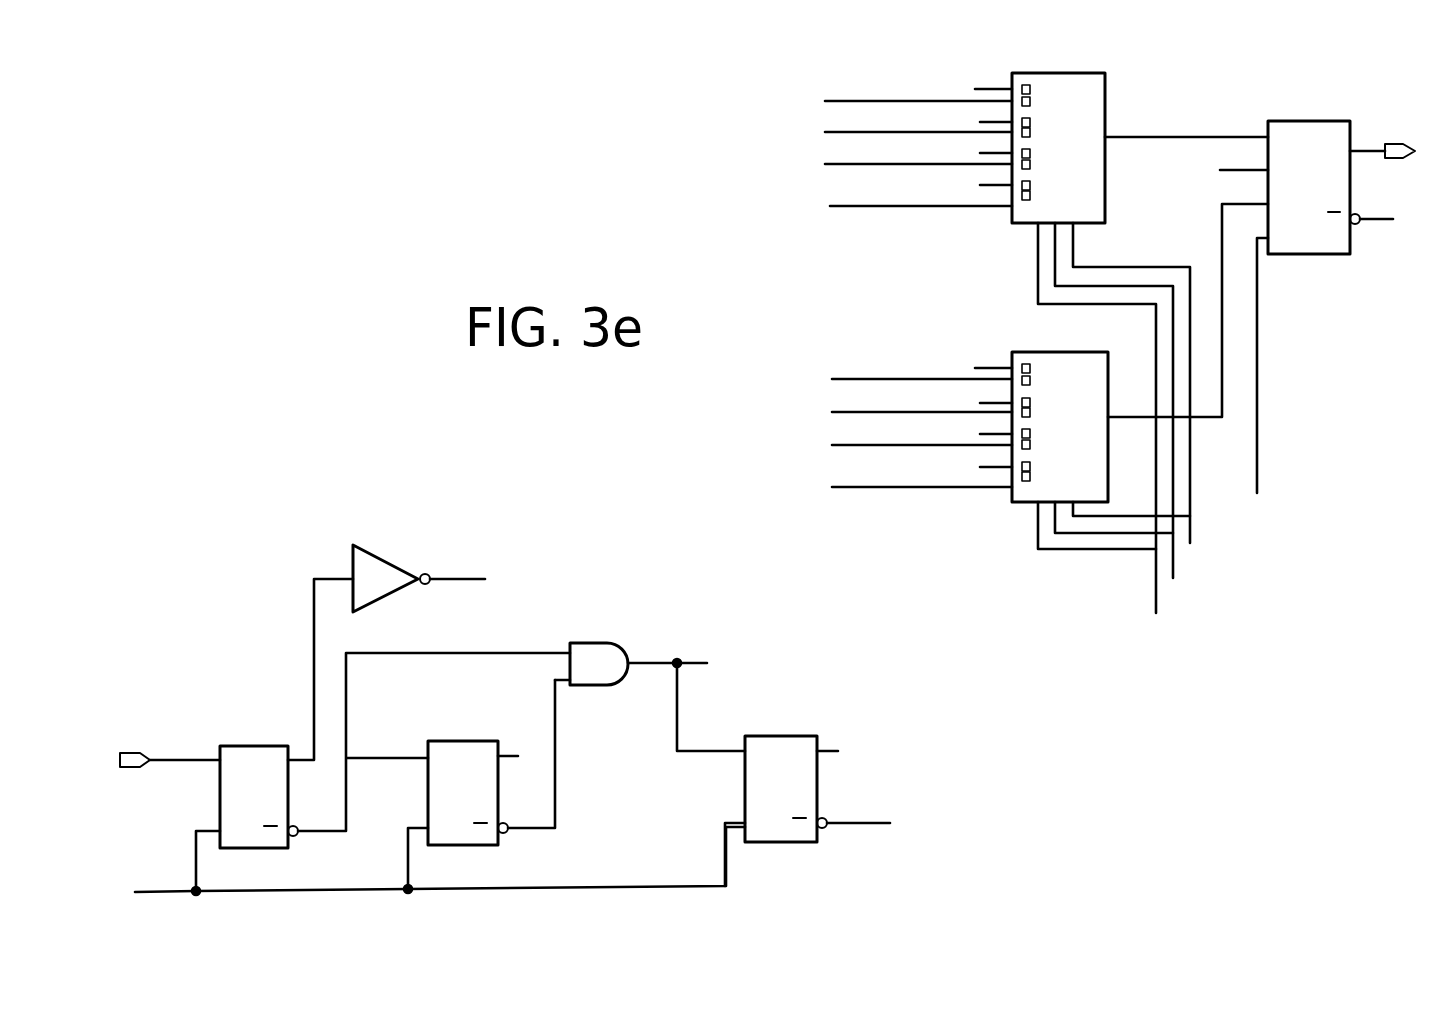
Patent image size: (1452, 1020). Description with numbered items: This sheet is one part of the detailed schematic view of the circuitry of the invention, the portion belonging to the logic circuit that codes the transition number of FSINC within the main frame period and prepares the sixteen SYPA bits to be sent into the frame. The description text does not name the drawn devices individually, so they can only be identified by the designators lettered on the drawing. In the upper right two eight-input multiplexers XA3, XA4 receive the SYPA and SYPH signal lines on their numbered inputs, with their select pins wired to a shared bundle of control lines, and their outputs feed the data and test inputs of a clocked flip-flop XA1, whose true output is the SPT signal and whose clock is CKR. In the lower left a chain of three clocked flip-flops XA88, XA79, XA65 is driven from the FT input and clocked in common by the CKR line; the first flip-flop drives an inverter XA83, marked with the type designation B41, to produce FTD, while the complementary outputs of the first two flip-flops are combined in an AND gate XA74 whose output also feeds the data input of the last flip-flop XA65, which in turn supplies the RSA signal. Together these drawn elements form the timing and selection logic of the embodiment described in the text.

The 8-input multiplexer MUX81 XA3 is at (979, 327).
The 8-input multiplexer MUX81 XA4 is at (988, 430).
The D flip-flop with test inputs XA1 is at (1289, 292).
The inverter XA83 is at (434, 573).
The inverter output B41 is at (420, 598).
The AND gate XA74 is at (662, 648).
The D flip-flop XA88 is at (415, 742).
The D flip-flop XA79 is at (481, 784).
The D flip-flop XA65 is at (811, 774).